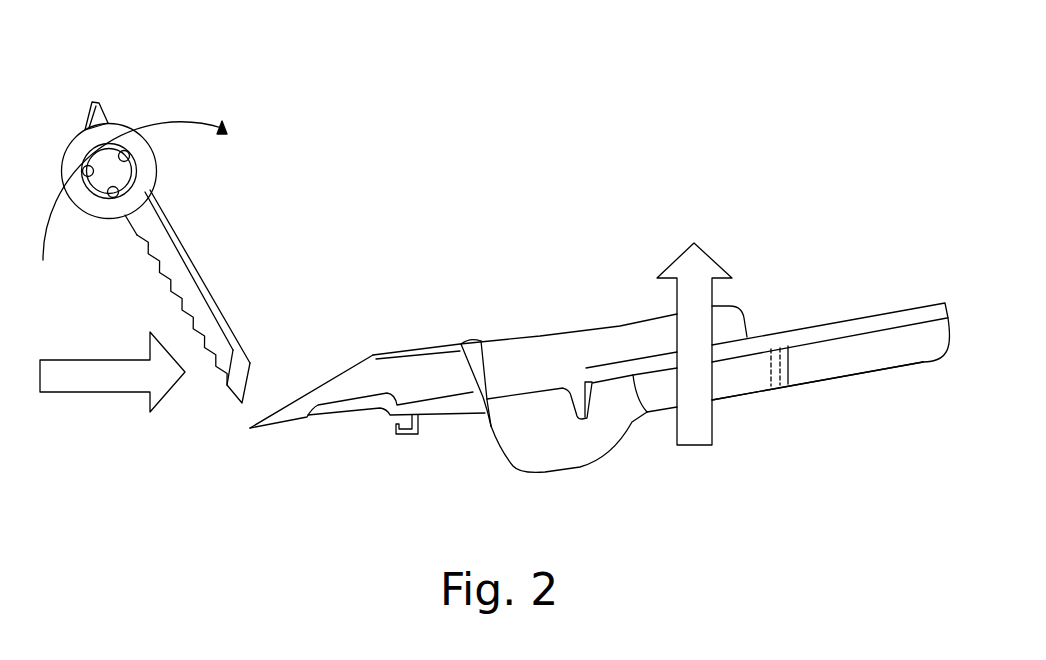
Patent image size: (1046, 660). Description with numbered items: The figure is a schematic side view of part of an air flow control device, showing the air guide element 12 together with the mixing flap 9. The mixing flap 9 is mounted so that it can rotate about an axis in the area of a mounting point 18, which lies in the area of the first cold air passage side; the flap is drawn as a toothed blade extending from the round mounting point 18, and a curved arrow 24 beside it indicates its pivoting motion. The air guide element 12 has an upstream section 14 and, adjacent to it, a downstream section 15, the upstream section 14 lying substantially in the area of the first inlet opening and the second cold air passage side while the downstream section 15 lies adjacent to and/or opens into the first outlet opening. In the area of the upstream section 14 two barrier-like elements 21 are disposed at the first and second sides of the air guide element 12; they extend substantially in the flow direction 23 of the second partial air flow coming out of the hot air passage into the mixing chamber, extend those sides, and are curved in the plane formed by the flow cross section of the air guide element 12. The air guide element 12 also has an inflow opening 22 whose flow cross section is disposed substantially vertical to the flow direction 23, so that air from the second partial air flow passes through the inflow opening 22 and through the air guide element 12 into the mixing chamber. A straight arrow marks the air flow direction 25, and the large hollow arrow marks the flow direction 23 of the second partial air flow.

The mixing flap 9 is at (226, 318).
The air guide element 12 is at (600, 362).
The upstream section 14 is at (341, 422).
The downstream section 15 is at (547, 407).
The mounting point 18 is at (112, 119).
The barrier-like elements 21 is at (378, 356).
The inflow opening 22 is at (722, 398).
The flow direction of the second partial air flow 23 is at (698, 270).
The pivoting direction arrow 24 is at (223, 166).
The air flow direction 25 is at (97, 373).